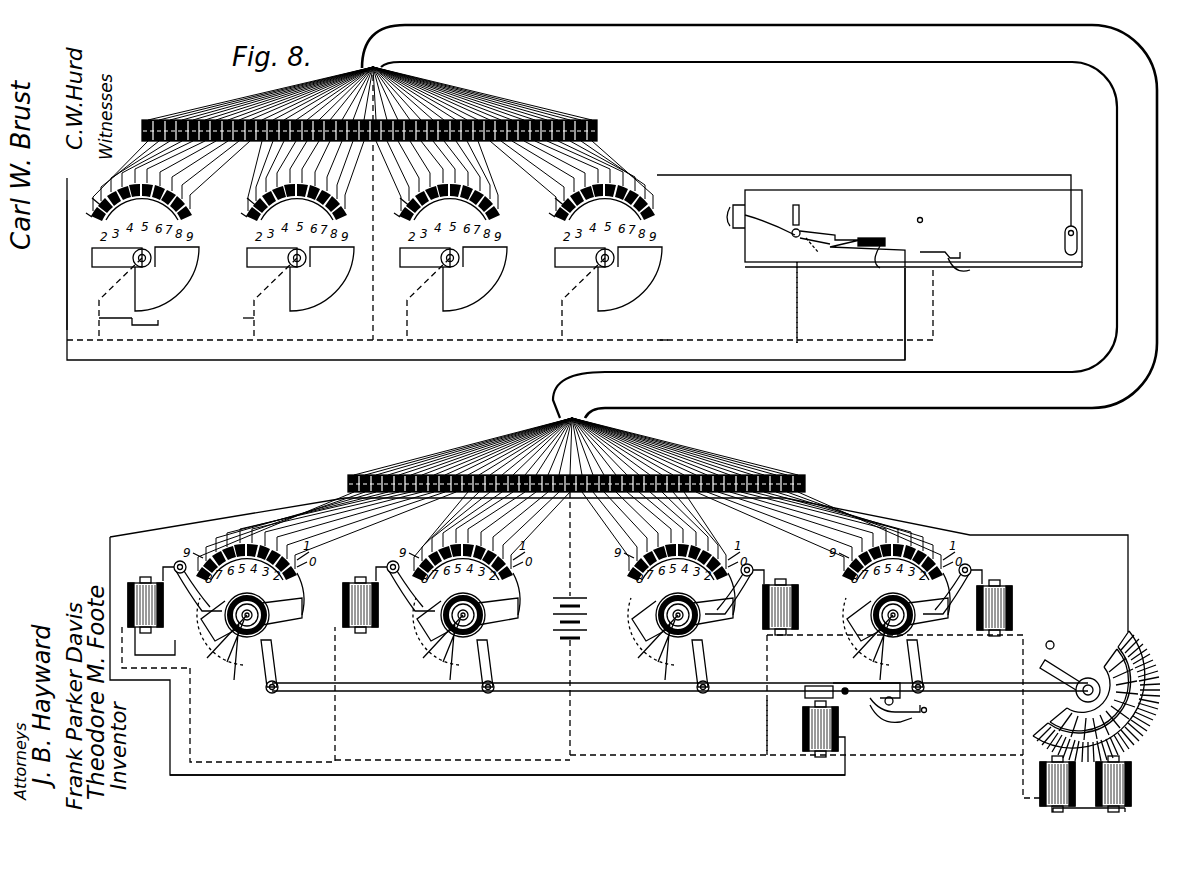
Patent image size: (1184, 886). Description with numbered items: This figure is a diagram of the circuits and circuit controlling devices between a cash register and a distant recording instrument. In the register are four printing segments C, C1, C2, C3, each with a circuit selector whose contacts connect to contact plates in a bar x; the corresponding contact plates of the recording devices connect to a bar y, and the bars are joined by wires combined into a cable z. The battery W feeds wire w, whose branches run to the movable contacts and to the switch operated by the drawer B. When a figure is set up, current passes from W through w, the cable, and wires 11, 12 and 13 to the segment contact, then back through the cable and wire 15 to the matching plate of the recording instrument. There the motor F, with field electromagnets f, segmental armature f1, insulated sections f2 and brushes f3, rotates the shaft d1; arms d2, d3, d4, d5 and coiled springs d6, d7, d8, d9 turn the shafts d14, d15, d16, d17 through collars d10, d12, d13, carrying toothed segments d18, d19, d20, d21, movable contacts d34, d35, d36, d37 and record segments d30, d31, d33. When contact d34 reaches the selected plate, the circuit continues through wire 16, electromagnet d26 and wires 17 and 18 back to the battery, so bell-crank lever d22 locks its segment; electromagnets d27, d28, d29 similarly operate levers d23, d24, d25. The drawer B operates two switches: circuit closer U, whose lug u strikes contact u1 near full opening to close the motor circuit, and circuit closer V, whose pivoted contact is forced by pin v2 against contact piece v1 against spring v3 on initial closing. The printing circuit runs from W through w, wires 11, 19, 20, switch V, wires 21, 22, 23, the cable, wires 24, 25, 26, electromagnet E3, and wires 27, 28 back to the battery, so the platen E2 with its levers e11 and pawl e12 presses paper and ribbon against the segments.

The wire 11 is at (188, 110).
The wire 12 is at (243, 318).
The wire 13 is at (99, 318).
The wire 15 is at (335, 527).
The wire 16 is at (175, 645).
The wire 17 is at (190, 718).
The wire 18 is at (452, 751).
The wire 19 is at (666, 340).
The wire 20 is at (797, 318).
The wire 21 is at (905, 320).
The wire 22 is at (357, 362).
The wire 23 is at (67, 283).
The wire 24 is at (248, 515).
The wire 25 is at (452, 776).
The wire 26 is at (845, 752).
The wire 27 is at (803, 725).
The wire 28 is at (796, 749).
The bar x is at (381, 130).
The bar y is at (588, 486).
The cable z is at (759, 221).
The drawer B is at (904, 228).
The printing segment C is at (137, 262).
The printing segment C1 is at (292, 262).
The printing segment C2 is at (445, 262).
The printing segment C3 is at (600, 262).
The circuit closer V is at (820, 236).
The contact piece v1 is at (880, 268).
The pin v2 is at (923, 218).
The spring v3 is at (805, 262).
The circuit closer U is at (959, 252).
The lug u is at (1065, 243).
The contact u1 is at (963, 274).
The battery W is at (584, 618).
The wire w is at (571, 719).
The shaft d1 is at (663, 692).
The arm d2 is at (280, 660).
The arm d3 is at (495, 662).
The arm d4 is at (708, 664).
The arm d5 is at (922, 664).
The coiled spring d6 is at (232, 668).
The coiled spring d7 is at (438, 650).
The coiled spring d8 is at (640, 655).
The coiled spring d9 is at (862, 655).
The collar d10 is at (222, 655).
The collar d12 is at (681, 616).
The collar d13 is at (896, 616).
The shaft d14 is at (290, 620).
The shaft d15 is at (506, 620).
The shaft d16 is at (630, 638).
The shaft d17 is at (845, 630).
The toothed segment d18 is at (250, 616).
The toothed segment d19 is at (466, 616).
The toothed segment d20 is at (722, 628).
The toothed segment d21 is at (930, 624).
The bell-crank lever d22 is at (176, 563).
The bell-crank lever d23 is at (390, 562).
The bell-crank lever d24 is at (756, 575).
The bell-crank lever d25 is at (975, 575).
The electromagnet d26 is at (128, 592).
The electromagnet d27 is at (355, 627).
The electromagnet d28 is at (798, 606).
The electromagnet d29 is at (1012, 611).
The printing segment d30 is at (236, 685).
The printing segment d31 is at (648, 641).
The printing segment d33 is at (458, 646).
The movable contact d34 is at (300, 578).
The movable contact d35 is at (514, 578).
The movable contact d36 is at (698, 589).
The movable contact d37 is at (915, 586).
The printing platen E2 is at (830, 686).
The electromagnet E3 is at (838, 728).
The platen lever e11 is at (898, 721).
The pawl e12 is at (922, 708).
The motor F is at (1096, 696).
The electromagnets f is at (1085, 784).
The armature f1 is at (1162, 710).
The insulated sections f2 is at (1140, 660).
The brushes f3 is at (1040, 728).